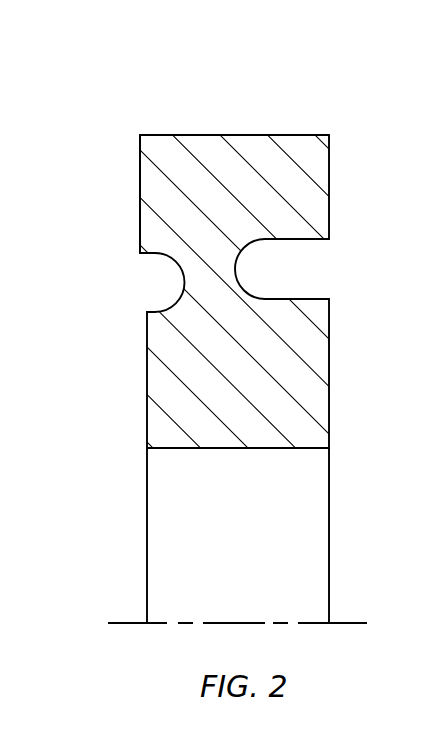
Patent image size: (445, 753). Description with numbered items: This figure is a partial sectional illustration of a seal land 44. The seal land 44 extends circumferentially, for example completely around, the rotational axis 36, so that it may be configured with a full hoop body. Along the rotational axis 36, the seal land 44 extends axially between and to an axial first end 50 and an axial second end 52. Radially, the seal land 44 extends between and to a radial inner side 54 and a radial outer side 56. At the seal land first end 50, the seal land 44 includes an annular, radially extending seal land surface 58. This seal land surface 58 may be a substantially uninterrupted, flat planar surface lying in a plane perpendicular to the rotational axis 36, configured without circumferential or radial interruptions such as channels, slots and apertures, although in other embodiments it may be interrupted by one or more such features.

The seal land 44 is at (366, 89).
The axial first end 50 is at (128, 223).
The axial second end 52 is at (341, 223).
The radial inner side 54 is at (240, 464).
The radial outer side 56 is at (233, 120).
The seal land surface 58 is at (140, 180).
The rotational axis 36 is at (355, 620).